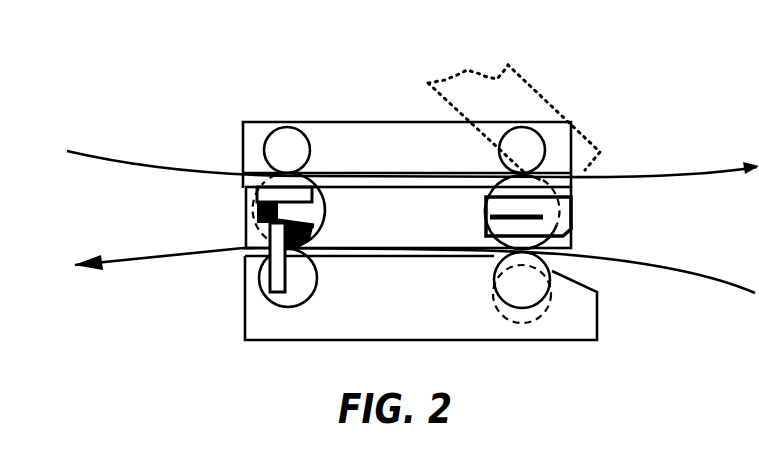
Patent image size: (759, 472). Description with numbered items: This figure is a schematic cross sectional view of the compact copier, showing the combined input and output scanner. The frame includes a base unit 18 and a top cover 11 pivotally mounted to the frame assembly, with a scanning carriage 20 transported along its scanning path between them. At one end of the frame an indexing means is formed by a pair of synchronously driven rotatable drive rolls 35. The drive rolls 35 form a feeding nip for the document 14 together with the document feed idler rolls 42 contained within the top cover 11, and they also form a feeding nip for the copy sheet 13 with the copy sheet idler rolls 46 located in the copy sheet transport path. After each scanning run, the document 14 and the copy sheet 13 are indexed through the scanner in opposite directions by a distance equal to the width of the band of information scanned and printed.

The top cover 11 is at (347, 122).
The copy sheet 13 is at (137, 259).
The document 14 is at (642, 178).
The base unit 18 is at (488, 341).
The scanning carriage 20 is at (410, 232).
The drive rolls 35 is at (326, 213).
The document feed idler rolls 42 is at (311, 146).
The copy sheet idler rolls 46 is at (317, 277).